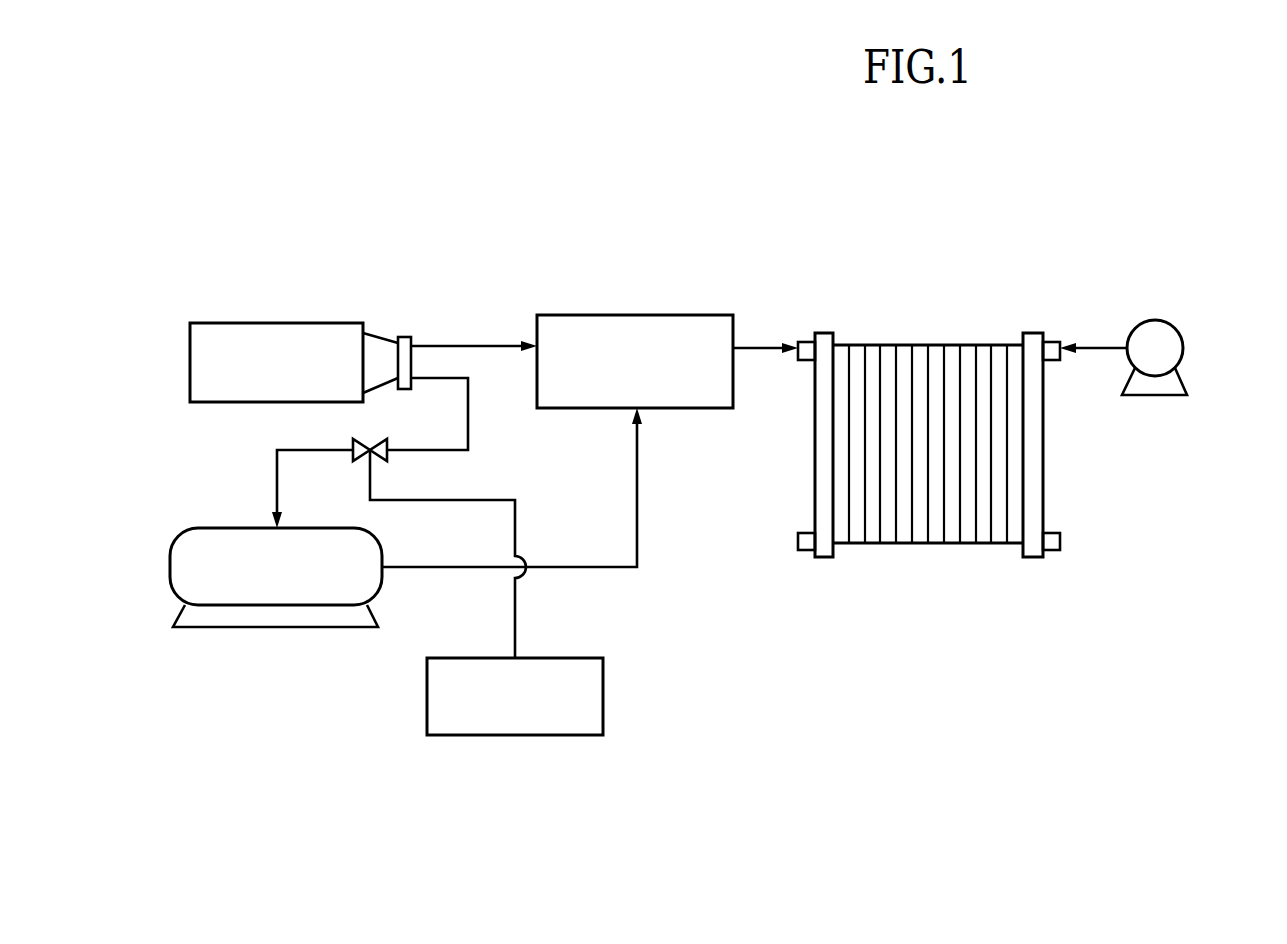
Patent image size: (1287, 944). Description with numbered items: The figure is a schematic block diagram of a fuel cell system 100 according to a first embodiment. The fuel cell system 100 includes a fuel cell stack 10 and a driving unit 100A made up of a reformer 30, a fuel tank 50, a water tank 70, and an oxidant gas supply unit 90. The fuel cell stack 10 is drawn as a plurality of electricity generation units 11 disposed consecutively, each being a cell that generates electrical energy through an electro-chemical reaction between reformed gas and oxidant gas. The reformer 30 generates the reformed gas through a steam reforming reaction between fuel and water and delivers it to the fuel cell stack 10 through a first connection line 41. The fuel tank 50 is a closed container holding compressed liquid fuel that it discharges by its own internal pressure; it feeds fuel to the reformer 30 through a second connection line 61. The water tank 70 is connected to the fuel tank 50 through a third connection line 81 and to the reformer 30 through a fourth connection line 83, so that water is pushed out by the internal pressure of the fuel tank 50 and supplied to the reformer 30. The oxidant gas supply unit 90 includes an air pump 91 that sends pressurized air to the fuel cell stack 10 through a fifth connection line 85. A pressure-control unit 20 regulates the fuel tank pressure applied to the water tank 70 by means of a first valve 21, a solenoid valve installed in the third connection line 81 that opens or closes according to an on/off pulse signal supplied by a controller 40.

The fuel cell system 100 is at (718, 168).
The driving unit 100A is at (747, 528).
The fuel cell stack 10 is at (929, 446).
The electricity generation unit 11 is at (934, 543).
The pressure-control unit 20 is at (320, 433).
The first valve 21 is at (380, 456).
The reformer 30 is at (636, 315).
The controller 40 is at (603, 693).
The first connection line 41 is at (766, 345).
The fuel tank 50 is at (277, 323).
The second connection line 61 is at (474, 345).
The water tank 70 is at (224, 528).
The third connection line 81 is at (468, 413).
The fourth connection line 83 is at (637, 487).
The fifth connection line 85 is at (1088, 352).
The oxidant gas supply unit 90 is at (1153, 422).
The air pump 91 is at (1152, 320).